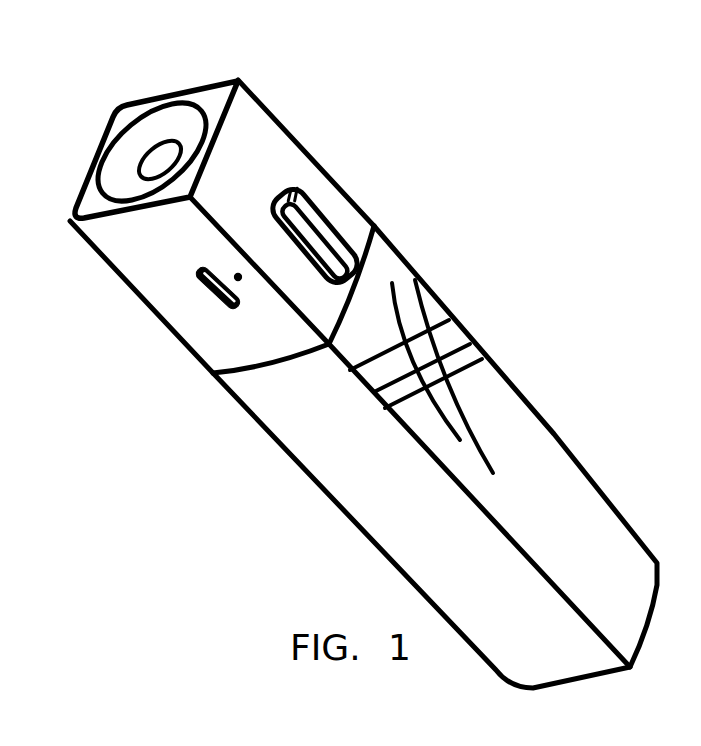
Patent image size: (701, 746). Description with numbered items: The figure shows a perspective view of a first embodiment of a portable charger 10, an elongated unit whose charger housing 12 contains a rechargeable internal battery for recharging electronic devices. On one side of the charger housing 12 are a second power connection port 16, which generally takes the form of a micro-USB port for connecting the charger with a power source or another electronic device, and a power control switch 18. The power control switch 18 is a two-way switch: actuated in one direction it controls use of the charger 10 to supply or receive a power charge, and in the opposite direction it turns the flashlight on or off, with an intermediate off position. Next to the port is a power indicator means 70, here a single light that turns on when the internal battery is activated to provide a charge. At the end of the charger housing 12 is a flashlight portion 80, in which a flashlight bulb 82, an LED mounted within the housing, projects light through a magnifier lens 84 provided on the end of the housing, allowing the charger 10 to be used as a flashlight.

The portable charger 10 is at (553, 275).
The charger housing 12 is at (557, 500).
The second power connection port 16 is at (206, 289).
The power control switch 18 is at (317, 240).
The power indicator means 70 is at (241, 280).
The flashlight portion 80 is at (101, 98).
The flashlight bulb 82 is at (156, 160).
The magnifier lens 84 is at (183, 122).